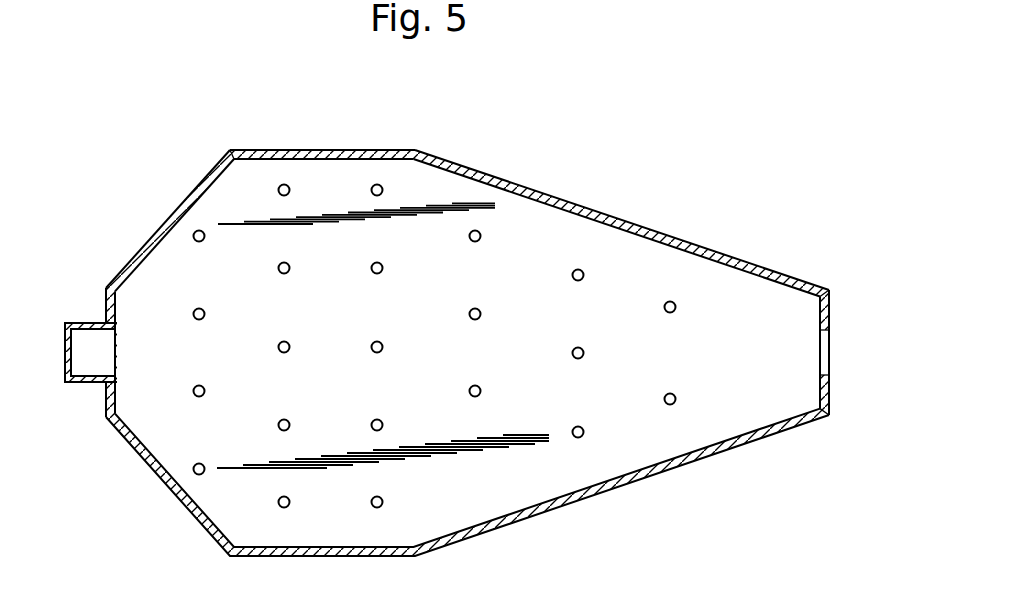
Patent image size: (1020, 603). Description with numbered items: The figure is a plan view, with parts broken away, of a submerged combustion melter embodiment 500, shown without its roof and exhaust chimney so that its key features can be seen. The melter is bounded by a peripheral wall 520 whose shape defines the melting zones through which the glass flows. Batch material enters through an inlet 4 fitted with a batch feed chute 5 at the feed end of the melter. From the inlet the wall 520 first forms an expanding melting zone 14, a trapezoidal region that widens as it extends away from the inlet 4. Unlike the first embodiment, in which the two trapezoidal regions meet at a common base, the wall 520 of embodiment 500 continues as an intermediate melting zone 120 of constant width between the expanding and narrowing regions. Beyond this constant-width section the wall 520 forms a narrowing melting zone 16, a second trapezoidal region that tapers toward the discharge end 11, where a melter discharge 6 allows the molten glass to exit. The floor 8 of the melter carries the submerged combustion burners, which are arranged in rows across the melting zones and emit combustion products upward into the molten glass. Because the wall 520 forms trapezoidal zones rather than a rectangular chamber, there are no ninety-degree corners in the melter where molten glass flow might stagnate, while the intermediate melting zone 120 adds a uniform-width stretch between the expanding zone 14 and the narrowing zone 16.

The melter embodiment 500 is at (707, 163).
The intermediate melting zone 120 is at (285, 150).
The wall 520 is at (490, 173).
The expanding melting zone 14 is at (167, 267).
The narrowing melting zone 16 is at (556, 243).
The floor 8 is at (728, 330).
The melter discharge 6 is at (827, 342).
The discharge end 11 is at (830, 387).
The batch feed chute 5 is at (83, 322).
The inlet 4 is at (113, 352).